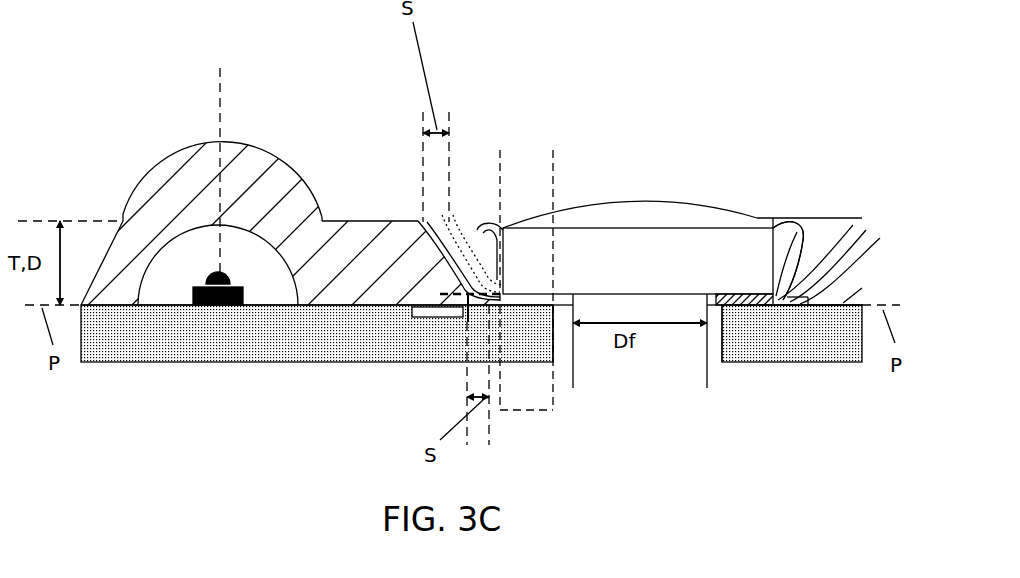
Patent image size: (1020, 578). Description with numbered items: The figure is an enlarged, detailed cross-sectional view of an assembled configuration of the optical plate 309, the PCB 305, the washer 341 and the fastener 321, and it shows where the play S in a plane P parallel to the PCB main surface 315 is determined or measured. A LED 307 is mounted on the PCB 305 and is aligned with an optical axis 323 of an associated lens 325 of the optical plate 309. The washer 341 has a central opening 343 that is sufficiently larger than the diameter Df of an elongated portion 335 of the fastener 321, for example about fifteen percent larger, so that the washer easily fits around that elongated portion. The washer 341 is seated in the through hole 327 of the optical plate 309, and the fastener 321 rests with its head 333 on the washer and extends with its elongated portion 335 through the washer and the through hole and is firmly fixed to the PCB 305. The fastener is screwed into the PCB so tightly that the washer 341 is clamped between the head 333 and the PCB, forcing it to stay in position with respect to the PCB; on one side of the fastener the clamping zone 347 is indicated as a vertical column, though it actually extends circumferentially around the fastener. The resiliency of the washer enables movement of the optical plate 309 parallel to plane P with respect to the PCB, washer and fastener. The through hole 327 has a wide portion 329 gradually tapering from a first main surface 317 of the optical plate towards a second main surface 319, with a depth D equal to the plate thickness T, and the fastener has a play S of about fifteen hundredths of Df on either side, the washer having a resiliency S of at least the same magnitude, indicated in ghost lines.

The PCB 305 is at (113, 347).
The LED 307 is at (207, 305).
The optical plate 309 is at (343, 236).
The PCB main surface 315 is at (117, 303).
The first main surface of the optical plate 317 is at (383, 218).
The second main surface of the optical plate 319 is at (322, 307).
The fastener 321 is at (580, 200).
The optical axis 323 is at (215, 113).
The lens 325 is at (155, 180).
The through hole 327 is at (776, 206).
The wide portion 329 is at (810, 235).
The head 333 is at (632, 252).
The elongated portion 335 is at (657, 367).
The washer 341 is at (538, 298).
The central opening 343 is at (562, 300).
The clamping zone 347 is at (527, 173).